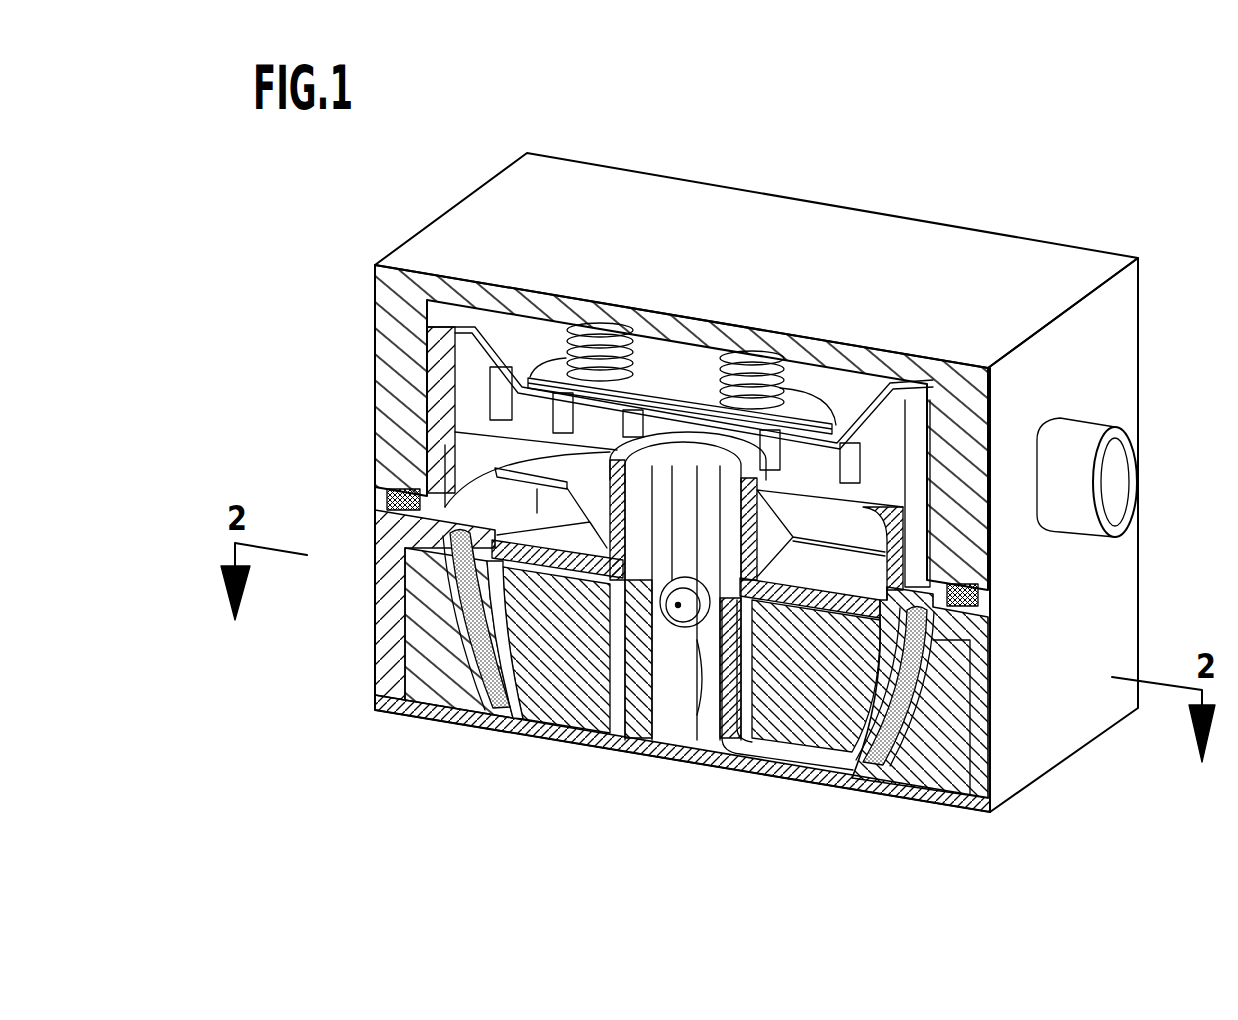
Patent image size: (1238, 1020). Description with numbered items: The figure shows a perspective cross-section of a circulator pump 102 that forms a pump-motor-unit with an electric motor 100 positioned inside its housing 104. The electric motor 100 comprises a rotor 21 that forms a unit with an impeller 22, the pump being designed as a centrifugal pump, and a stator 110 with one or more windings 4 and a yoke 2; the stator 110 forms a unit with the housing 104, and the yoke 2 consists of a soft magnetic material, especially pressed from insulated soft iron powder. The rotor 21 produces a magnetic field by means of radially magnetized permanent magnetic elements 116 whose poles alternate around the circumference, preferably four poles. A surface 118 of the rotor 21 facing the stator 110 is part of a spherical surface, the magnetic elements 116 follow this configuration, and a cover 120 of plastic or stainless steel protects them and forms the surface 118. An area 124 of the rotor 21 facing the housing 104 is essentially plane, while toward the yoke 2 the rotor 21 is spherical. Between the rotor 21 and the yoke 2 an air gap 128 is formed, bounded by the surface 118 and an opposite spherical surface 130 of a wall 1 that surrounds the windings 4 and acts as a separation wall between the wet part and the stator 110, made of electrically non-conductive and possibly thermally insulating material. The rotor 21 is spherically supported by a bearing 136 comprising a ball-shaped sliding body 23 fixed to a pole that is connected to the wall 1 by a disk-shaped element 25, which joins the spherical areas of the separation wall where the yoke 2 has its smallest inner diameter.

The circulator pump 102 is at (953, 185).
The housing 104 is at (1070, 277).
The cover 120 is at (976, 681).
The stator 110 is at (452, 712).
The spherical surface 130 is at (972, 736).
The bearing 136 is at (692, 540).
The area of the rotor facing the housing 124 is at (626, 700).
The sliding body 23 is at (679, 608).
The rotor 21 is at (588, 672).
The electric motor 100 is at (810, 715).
The magnetic elements 116 is at (775, 716).
The surface of the rotor 118 is at (933, 793).
The wall 1 is at (902, 778).
The windings 4 is at (437, 632).
The yoke 2 is at (432, 682).
The air gap 128 is at (490, 598).
The impeller 22 is at (533, 468).
The element 25 is at (790, 487).